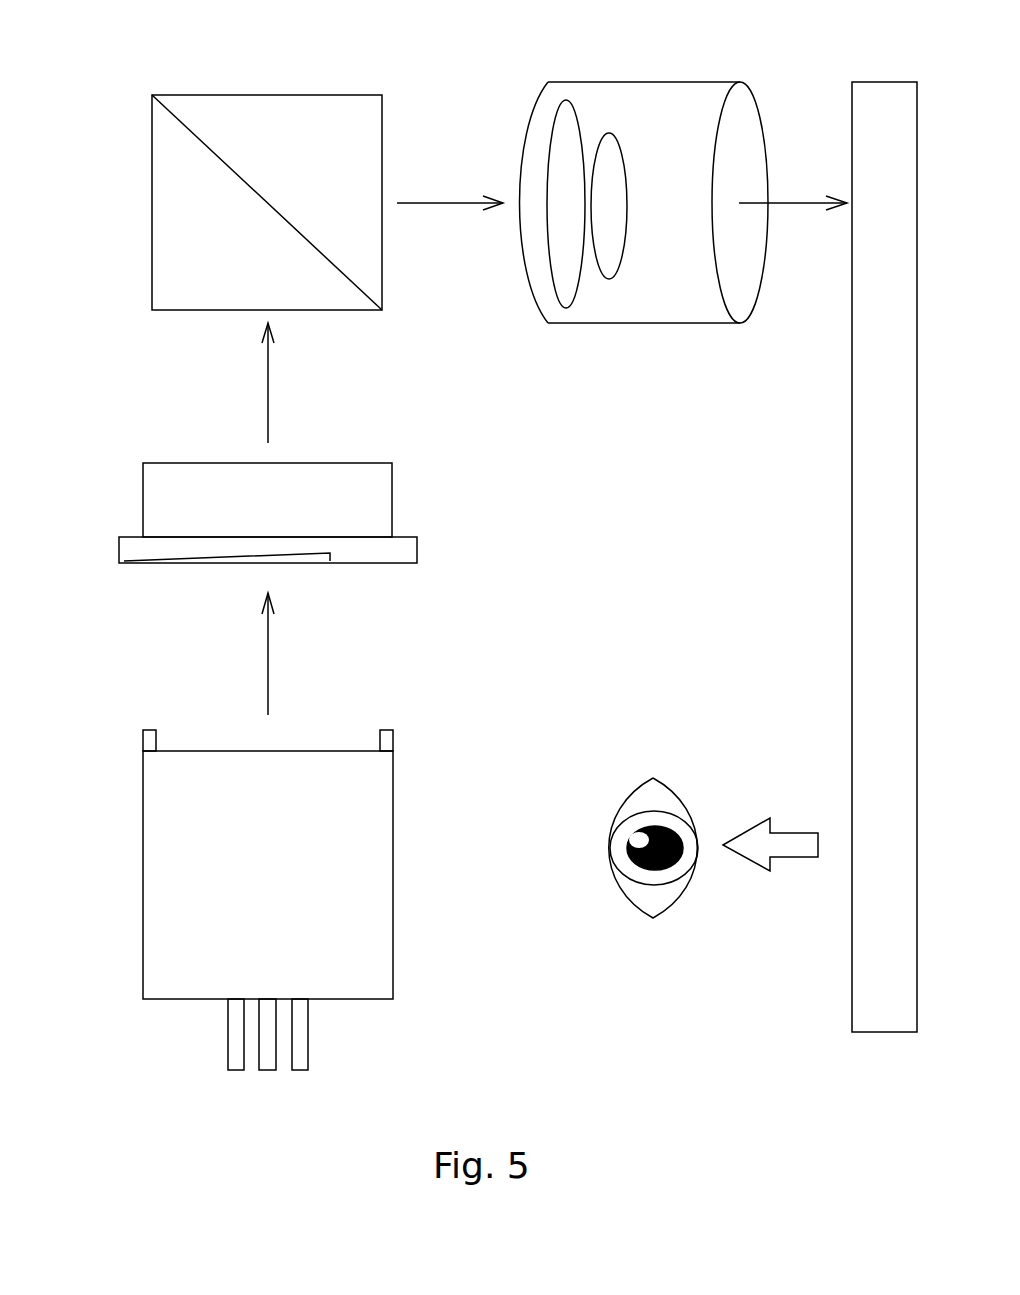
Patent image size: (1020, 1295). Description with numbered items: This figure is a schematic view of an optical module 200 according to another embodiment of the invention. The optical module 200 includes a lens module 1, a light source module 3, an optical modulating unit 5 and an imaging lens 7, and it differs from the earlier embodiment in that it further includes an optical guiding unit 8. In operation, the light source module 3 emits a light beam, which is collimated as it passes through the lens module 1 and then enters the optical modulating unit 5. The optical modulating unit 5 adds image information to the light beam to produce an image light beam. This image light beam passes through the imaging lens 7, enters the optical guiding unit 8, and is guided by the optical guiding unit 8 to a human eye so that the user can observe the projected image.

The optical module 200 is at (115, 32).
The lens module 1 is at (143, 507).
The light source module 3 is at (144, 875).
The optical modulating unit 5 is at (152, 202).
The imaging lens 7 is at (657, 323).
The optical guiding unit 8 is at (872, 593).